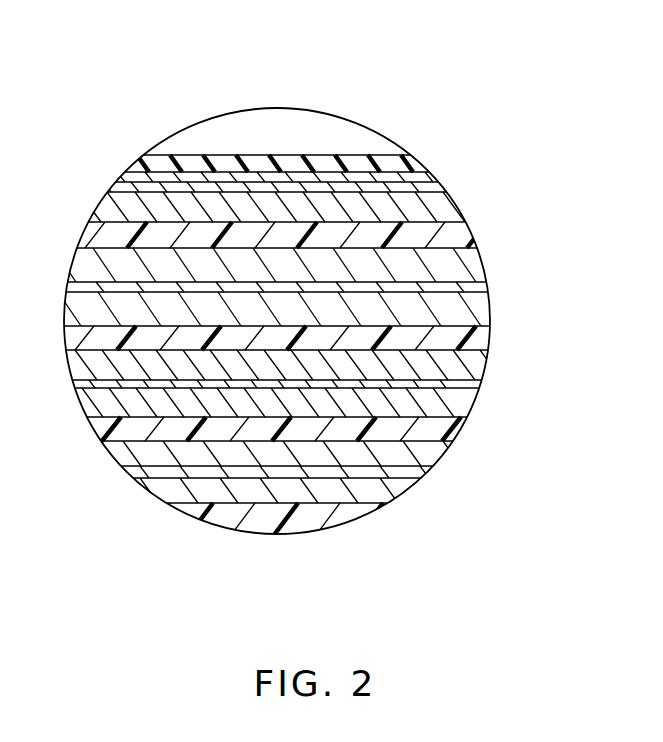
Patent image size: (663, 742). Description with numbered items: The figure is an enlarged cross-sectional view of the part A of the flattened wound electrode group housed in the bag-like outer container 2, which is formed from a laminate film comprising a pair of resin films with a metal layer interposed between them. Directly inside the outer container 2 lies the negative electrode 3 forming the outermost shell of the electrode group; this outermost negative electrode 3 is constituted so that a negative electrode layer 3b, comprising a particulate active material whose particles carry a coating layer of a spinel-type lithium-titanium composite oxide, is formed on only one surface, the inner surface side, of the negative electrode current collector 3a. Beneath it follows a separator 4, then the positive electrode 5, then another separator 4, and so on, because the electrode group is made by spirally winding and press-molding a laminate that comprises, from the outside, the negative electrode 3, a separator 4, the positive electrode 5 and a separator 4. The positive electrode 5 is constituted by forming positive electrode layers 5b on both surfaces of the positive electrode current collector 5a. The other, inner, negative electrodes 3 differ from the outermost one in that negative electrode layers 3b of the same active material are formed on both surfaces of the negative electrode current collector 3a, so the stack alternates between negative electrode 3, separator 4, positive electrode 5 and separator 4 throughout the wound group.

The part A is at (178, 146).
The outer container 2 is at (415, 163).
The negative electrode 3 is at (330, 295).
The negative electrode current collector 3a is at (445, 183).
The negative electrode layer 3b is at (442, 208).
The separator 4 is at (86, 238).
The positive electrode 5 is at (330, 395).
The positive electrode current collector 5a is at (468, 285).
The positive electrode layer 5b is at (467, 257).